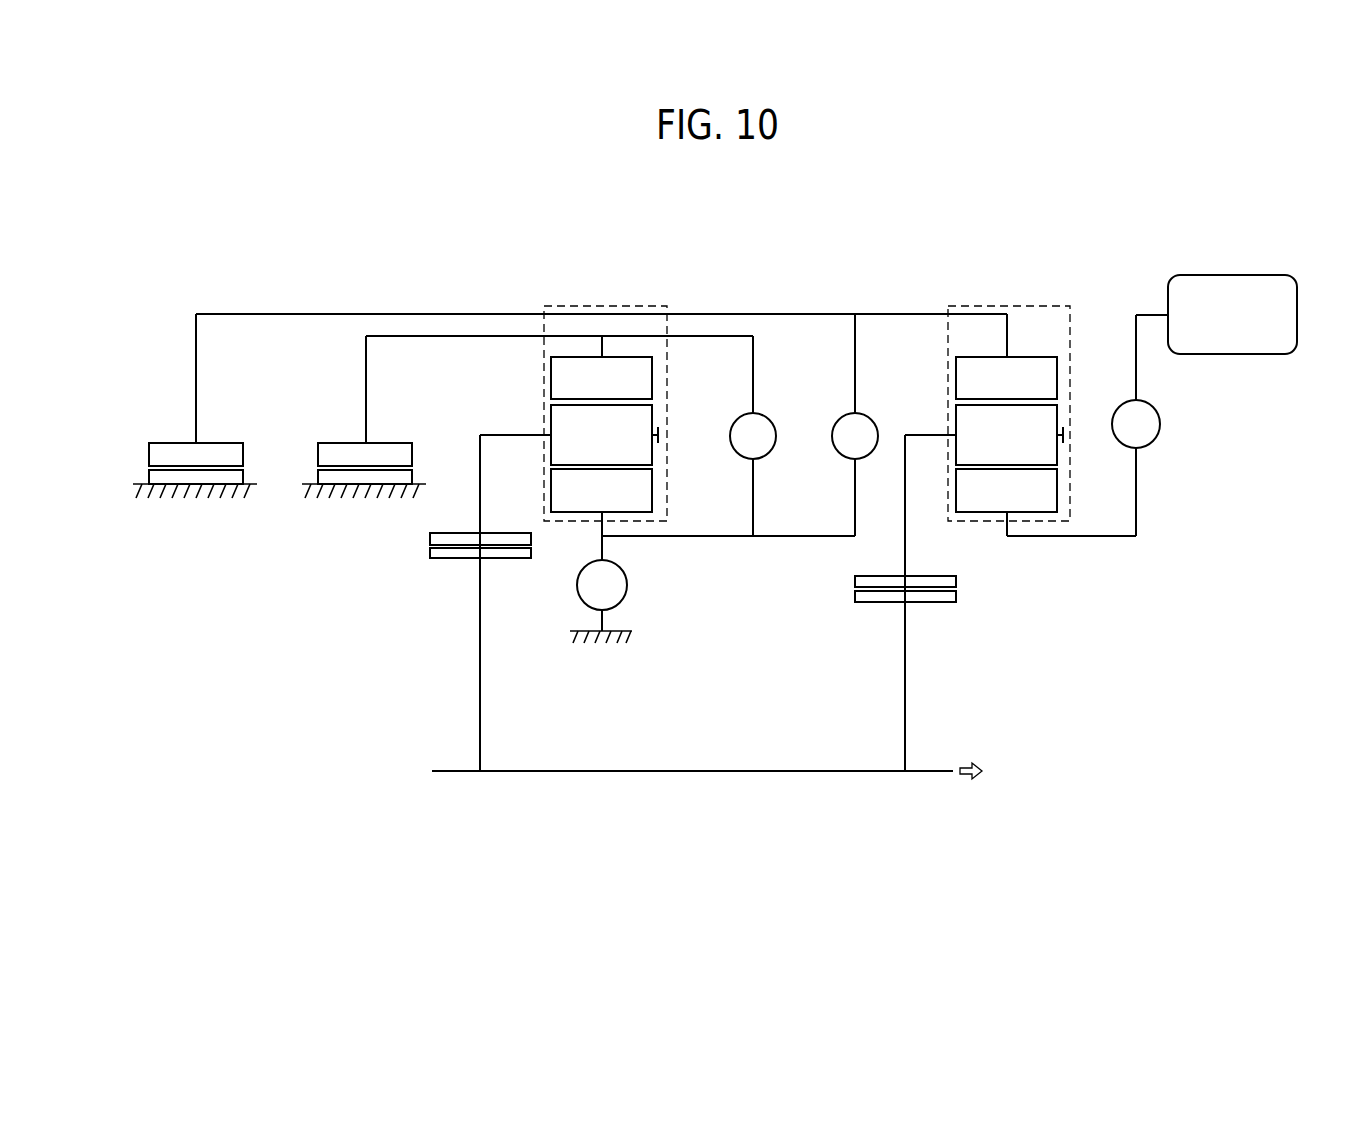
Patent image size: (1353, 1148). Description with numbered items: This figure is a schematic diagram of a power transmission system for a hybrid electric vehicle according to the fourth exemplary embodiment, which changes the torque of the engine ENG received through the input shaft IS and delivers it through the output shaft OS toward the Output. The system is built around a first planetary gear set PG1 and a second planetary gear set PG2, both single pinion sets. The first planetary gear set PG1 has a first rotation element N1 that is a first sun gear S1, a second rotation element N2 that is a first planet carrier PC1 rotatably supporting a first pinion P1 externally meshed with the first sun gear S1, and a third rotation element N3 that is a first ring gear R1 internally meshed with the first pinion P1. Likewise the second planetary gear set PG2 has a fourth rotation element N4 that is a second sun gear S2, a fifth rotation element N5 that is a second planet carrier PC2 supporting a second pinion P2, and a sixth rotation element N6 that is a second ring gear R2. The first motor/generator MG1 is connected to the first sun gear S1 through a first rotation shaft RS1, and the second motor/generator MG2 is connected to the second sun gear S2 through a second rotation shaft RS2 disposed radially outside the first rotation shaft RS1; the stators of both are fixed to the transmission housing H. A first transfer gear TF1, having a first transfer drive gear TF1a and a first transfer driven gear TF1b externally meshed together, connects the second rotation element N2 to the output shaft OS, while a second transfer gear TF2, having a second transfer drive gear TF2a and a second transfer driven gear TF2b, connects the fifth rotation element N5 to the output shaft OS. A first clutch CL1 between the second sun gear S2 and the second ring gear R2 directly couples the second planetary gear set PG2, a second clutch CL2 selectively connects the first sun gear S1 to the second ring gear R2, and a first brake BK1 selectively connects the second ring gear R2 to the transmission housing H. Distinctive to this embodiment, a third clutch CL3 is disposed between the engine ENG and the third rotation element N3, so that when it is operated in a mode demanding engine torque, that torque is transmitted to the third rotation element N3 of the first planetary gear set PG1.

The second rotation shaft RS2 is at (419, 334).
The first rotation shaft RS1 is at (742, 312).
The input shaft IS is at (1150, 312).
The engine ENG is at (1232, 314).
The first motor/generator MG1 is at (159, 437).
The second motor/generator MG2 is at (328, 437).
The transmission housing H is at (196, 490).
The second planetary gear set PG2 is at (603, 307).
The fourth rotation element N4 is at (601, 378).
The second sun gear S2 is at (601, 378).
The second pinion P2 is at (604, 435).
The sixth rotation element N6 is at (601, 490).
The second ring gear R2 is at (601, 490).
The fifth rotation element N5 is at (493, 566).
The second planet carrier PC2 is at (500, 432).
The first clutch CL1 is at (753, 436).
The second clutch CL2 is at (855, 436).
The third clutch CL3 is at (1136, 424).
The first planetary gear set PG1 is at (1005, 307).
The first rotation element N1 is at (1006, 378).
The first sun gear S1 is at (1006, 378).
The first pinion P1 is at (1009, 435).
The third rotation element N3 is at (1006, 490).
The first ring gear R1 is at (1006, 490).
The second rotation element N2 is at (908, 566).
The first planet carrier PC1 is at (925, 432).
The first brake BK1 is at (601, 601).
The second transfer gear TF2 is at (429, 584).
The second transfer drive gear TF2a is at (430, 539).
The second transfer driven gear TF2b is at (445, 559).
The first transfer gear TF1 is at (854, 627).
The first transfer drive gear TF1a is at (855, 581).
The first transfer driven gear TF1b is at (872, 603).
The output shaft OS is at (692, 773).
The output Output is at (1010, 773).